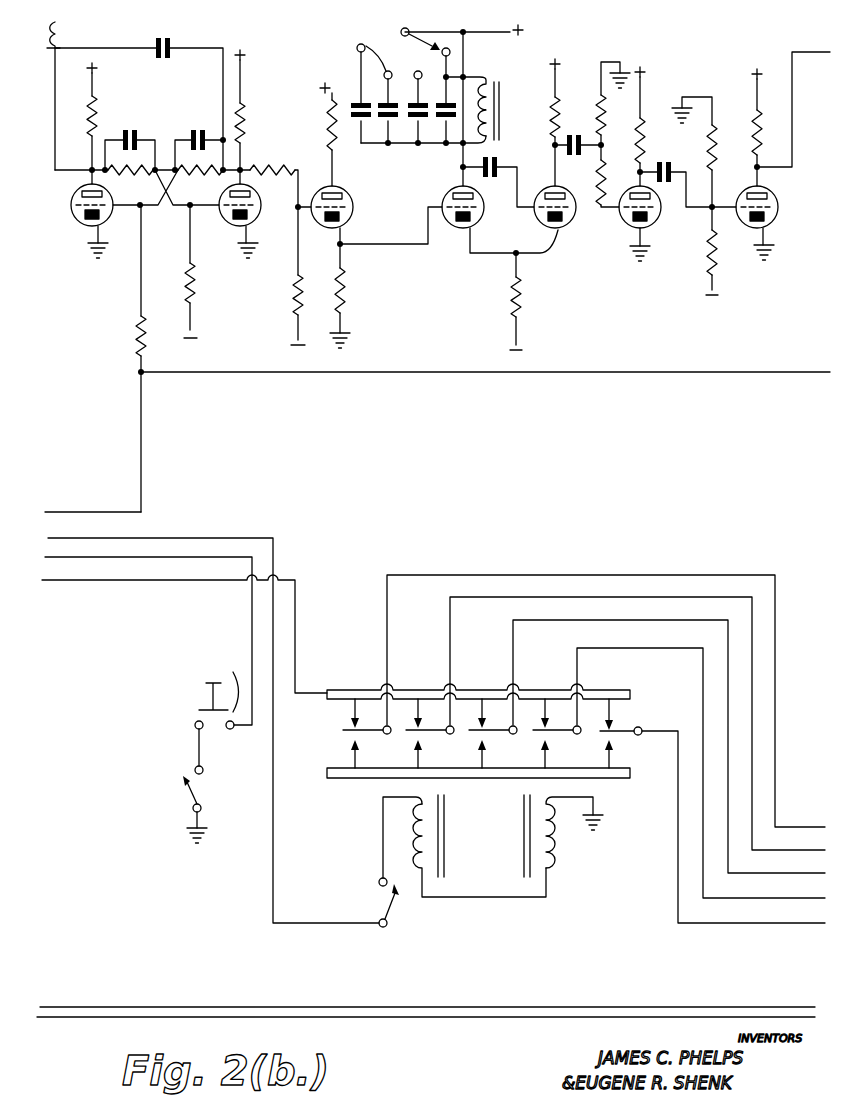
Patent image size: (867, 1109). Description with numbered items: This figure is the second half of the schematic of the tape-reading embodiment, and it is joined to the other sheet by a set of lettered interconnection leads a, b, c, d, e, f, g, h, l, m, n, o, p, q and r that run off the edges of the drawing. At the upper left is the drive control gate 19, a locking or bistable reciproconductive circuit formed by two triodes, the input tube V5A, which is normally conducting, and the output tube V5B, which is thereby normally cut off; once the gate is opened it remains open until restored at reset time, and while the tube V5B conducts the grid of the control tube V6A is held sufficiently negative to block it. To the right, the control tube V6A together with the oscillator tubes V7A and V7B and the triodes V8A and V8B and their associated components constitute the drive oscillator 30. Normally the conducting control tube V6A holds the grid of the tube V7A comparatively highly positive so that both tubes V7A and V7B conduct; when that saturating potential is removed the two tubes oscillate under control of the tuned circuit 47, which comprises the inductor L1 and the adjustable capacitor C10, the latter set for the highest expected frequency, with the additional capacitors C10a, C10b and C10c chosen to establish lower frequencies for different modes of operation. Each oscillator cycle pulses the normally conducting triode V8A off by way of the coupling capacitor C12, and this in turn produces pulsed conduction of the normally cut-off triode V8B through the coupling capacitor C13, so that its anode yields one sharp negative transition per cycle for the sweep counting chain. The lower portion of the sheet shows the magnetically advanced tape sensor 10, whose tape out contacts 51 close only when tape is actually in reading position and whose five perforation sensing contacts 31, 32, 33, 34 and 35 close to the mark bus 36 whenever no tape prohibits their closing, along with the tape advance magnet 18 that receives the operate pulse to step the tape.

The drive control gate 19 is at (168, 108).
The drive oscillator 30 is at (405, 212).
The tuned circuit 47 is at (433, 101).
The inductor L1 is at (462, 92).
The adjustable capacitor C10 is at (452, 123).
The additional capacitor C10a is at (408, 123).
The additional capacitor C10b is at (363, 82).
The additional capacitor C10c is at (357, 104).
The coupling capacitor C12 is at (571, 133).
The coupling capacitor C13 is at (672, 166).
The input tube V5A is at (74, 222).
The output tube V5B is at (222, 222).
The control tube V6A is at (318, 188).
The oscillator tube V7A is at (452, 232).
The oscillator tube V7B is at (560, 232).
The triode V8A is at (616, 224).
The triode V8B is at (770, 228).
The magnetically advanced tape sensor 10 is at (536, 559).
The mark bus 36 is at (632, 696).
The perforation sensing contact 31 is at (350, 740).
The perforation sensing contact 32 is at (414, 740).
The perforation sensing contact 33 is at (477, 740).
The perforation sensing contact 34 is at (540, 740).
The perforation sensing contact 35 is at (618, 740).
The tape out contacts 51 is at (228, 672).
The tape advance magnet 18 is at (520, 877).
The lead a is at (58, 34).
The lead b is at (50, 52).
The lead c is at (69, 512).
The lead d is at (65, 538).
The lead e is at (119, 557).
The lead f is at (118, 581).
The lead g is at (84, 990).
The lead h is at (78, 1020).
The lead l is at (826, 52).
The lead m is at (818, 375).
The lead n is at (791, 830).
The lead o is at (823, 852).
The lead p is at (808, 871).
The lead q is at (802, 896).
The lead r is at (816, 924).